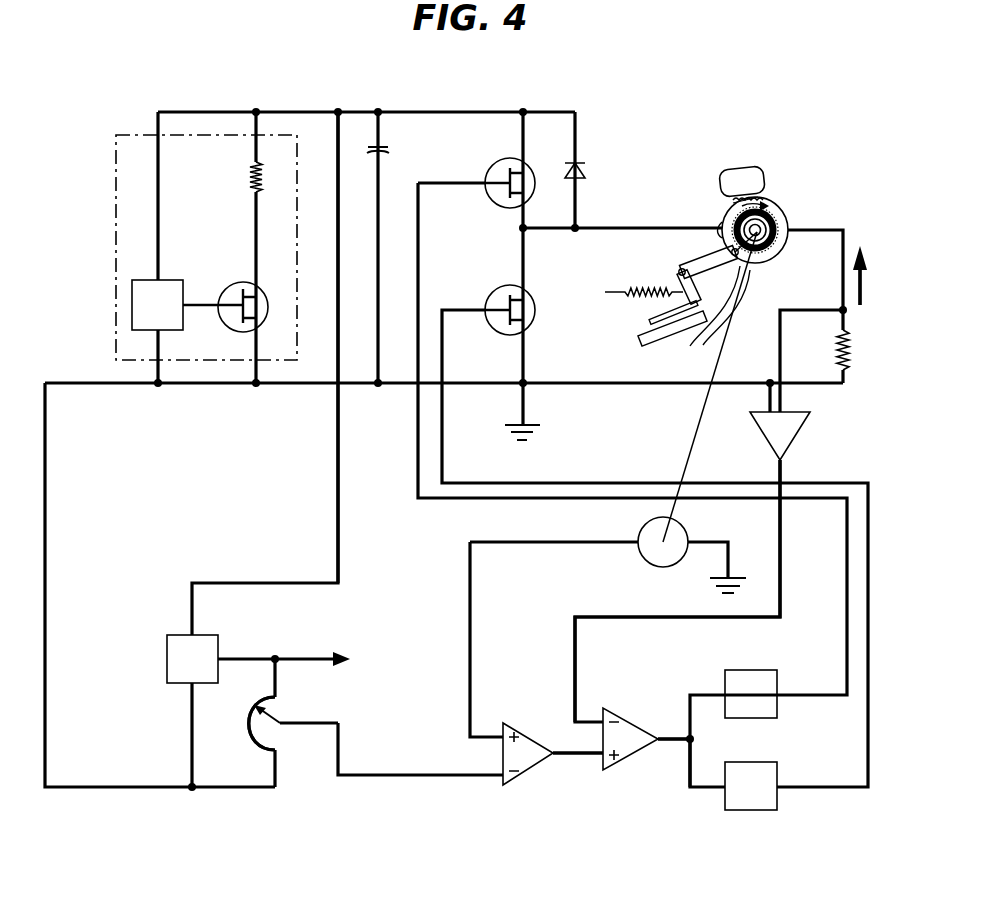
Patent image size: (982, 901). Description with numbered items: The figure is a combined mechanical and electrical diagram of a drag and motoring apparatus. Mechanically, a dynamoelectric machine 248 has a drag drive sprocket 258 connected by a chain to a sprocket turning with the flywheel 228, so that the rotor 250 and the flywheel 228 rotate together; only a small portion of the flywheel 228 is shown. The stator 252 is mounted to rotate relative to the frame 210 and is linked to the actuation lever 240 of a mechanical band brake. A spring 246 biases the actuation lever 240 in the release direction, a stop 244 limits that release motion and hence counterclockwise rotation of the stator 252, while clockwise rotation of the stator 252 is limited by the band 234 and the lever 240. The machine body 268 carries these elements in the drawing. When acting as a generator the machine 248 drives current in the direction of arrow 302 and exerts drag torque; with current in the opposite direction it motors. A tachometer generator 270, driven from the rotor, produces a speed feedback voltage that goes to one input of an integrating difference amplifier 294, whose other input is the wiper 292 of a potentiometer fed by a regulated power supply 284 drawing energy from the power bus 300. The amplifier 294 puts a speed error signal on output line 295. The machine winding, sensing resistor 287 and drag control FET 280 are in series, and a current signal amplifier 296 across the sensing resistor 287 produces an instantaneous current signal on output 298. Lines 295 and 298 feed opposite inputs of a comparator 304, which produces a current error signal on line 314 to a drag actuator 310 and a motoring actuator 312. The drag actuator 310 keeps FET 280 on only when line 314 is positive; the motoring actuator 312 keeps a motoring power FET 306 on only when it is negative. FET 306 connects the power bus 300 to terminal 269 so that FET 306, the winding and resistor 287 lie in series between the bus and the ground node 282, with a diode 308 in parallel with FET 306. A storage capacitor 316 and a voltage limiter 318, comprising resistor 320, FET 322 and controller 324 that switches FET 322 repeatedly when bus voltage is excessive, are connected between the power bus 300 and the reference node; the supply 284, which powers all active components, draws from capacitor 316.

The frame 210 is at (741, 167).
The flywheel 228 is at (640, 339).
The band 234 is at (649, 319).
The actuation lever 240 is at (674, 271).
The stop 244 is at (696, 339).
The spring 246 is at (603, 287).
The dynamoelectric machine 248 is at (785, 210).
The rotor 250 is at (788, 227).
The stator 252 is at (770, 198).
The drag drive sprocket 258 is at (763, 204).
The motor 268 is at (789, 239).
The terminal 269 is at (722, 224).
The tachometer generator 270 is at (639, 554).
The drag control FET 280 is at (496, 334).
The ground node 282 is at (519, 392).
The regulated power supply 284 is at (167, 653).
The sensing resistor 287 is at (850, 352).
The wiper 292 is at (289, 724).
The integrating difference amplifier 294 is at (529, 758).
The output line 295 is at (576, 758).
The current signal amplifier 296 is at (796, 429).
The output 298 is at (688, 619).
The power bus 300 is at (340, 111).
The arrow 302 is at (866, 268).
The comparator 304 is at (629, 712).
The motoring power FET 306 is at (491, 168).
The diode 308 is at (589, 162).
The drag actuator 310 is at (750, 812).
The motoring actuator 312 is at (777, 678).
The output line 314 is at (669, 746).
The storage capacitor 316 is at (382, 147).
The voltage limiter 318 is at (116, 178).
The resistor 320 is at (250, 180).
The FET 322 is at (231, 288).
The controller 324 is at (132, 302).